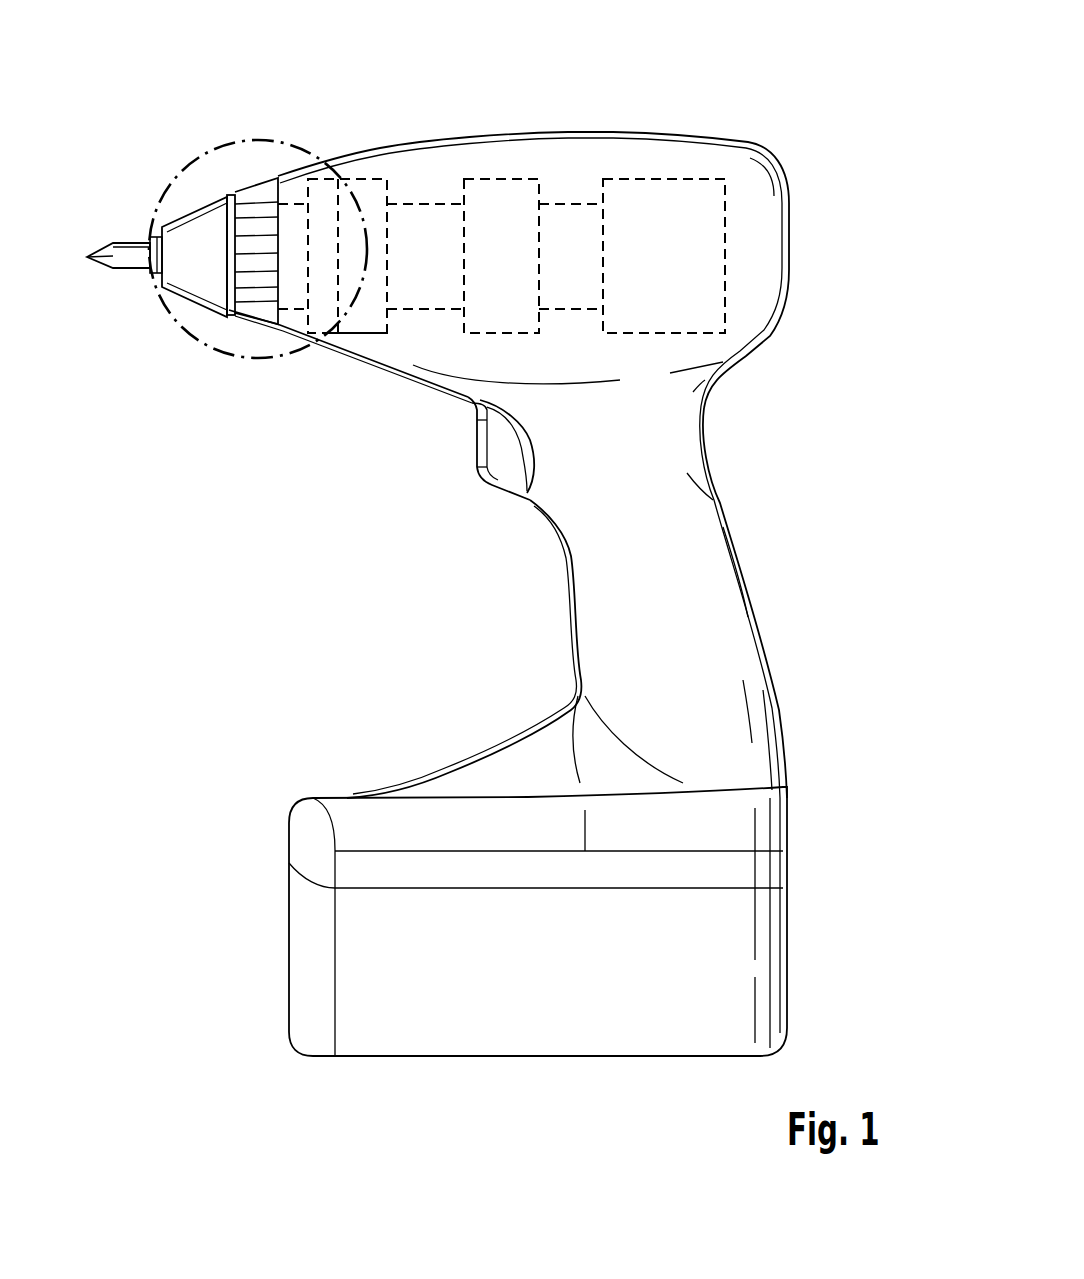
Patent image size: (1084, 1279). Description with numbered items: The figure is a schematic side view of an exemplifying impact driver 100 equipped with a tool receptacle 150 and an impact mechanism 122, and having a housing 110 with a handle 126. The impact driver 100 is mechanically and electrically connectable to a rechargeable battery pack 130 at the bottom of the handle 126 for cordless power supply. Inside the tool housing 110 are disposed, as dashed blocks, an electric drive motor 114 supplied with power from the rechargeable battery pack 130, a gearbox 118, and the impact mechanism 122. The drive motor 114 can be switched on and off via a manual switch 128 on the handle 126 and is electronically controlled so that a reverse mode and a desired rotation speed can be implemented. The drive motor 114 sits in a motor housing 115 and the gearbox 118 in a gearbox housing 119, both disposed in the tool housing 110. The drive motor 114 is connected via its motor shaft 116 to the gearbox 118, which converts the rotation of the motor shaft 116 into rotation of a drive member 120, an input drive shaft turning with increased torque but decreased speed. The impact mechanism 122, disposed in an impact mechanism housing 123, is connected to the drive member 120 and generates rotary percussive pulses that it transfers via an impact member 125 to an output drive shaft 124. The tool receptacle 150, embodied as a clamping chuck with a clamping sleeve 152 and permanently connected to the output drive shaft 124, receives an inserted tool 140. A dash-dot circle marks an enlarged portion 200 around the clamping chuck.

The impact driver 100 is at (754, 93).
The housing 110 is at (745, 307).
The electric drive motor 114 is at (705, 217).
The motor housing 115 is at (715, 269).
The motor shaft 116 is at (574, 204).
The gearbox 118 is at (494, 182).
The gearbox housing 119 is at (517, 172).
The drive member 120 is at (419, 205).
The impact mechanism 122 is at (359, 182).
The impact mechanism housing 123 is at (349, 325).
The output drive shaft 124 is at (289, 197).
The impact member 125 is at (317, 179).
The handle 126 is at (722, 572).
The manual switch 128 is at (489, 434).
The rechargeable battery pack 130 is at (754, 949).
The inserted tool 140 is at (125, 249).
The tool receptacle 150 is at (179, 222).
The clamping sleeve 152 is at (235, 190).
The enlarged portion 200 is at (215, 348).